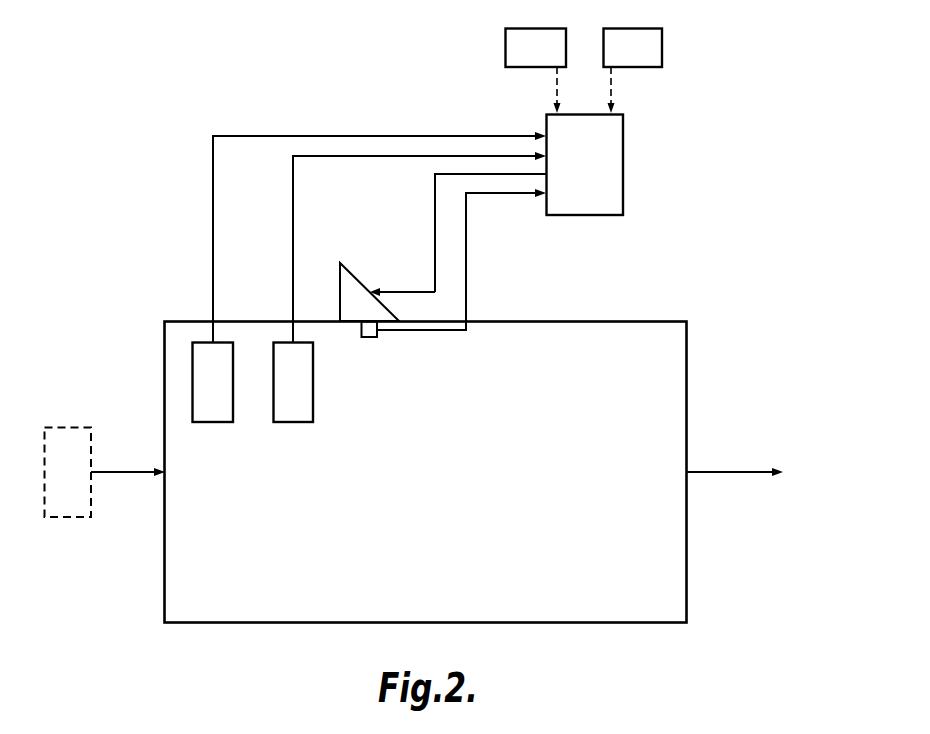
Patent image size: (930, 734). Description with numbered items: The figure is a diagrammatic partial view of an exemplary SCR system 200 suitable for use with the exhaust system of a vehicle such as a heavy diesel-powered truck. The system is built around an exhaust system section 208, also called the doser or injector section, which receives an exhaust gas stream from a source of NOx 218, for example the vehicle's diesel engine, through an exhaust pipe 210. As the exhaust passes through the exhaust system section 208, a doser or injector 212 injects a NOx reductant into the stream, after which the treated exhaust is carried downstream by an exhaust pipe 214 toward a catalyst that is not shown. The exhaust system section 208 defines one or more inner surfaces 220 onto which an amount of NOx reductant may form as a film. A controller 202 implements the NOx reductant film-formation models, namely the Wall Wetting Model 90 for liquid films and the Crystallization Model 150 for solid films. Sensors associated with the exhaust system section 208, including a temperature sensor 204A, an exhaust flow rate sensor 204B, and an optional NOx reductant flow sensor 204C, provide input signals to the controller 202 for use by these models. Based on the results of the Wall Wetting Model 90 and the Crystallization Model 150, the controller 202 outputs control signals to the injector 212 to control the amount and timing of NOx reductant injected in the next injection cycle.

The Wall Wetting Model 90 is at (545, 59).
The Crystallization Model 150 is at (646, 55).
The SCR system 200 is at (600, 237).
The controller 202 is at (599, 168).
The temperature sensor 204A is at (210, 422).
The exhaust flow rate sensor 204B is at (297, 422).
The NOx reductant flow sensor 204C is at (370, 337).
The exhaust system section 208 is at (660, 350).
The exhaust pipe 210 is at (123, 472).
The doser or injector 212 is at (357, 277).
The exhaust pipe 214 is at (727, 472).
The source of NOx 218 is at (70, 425).
The inner surfaces 220 is at (537, 330).